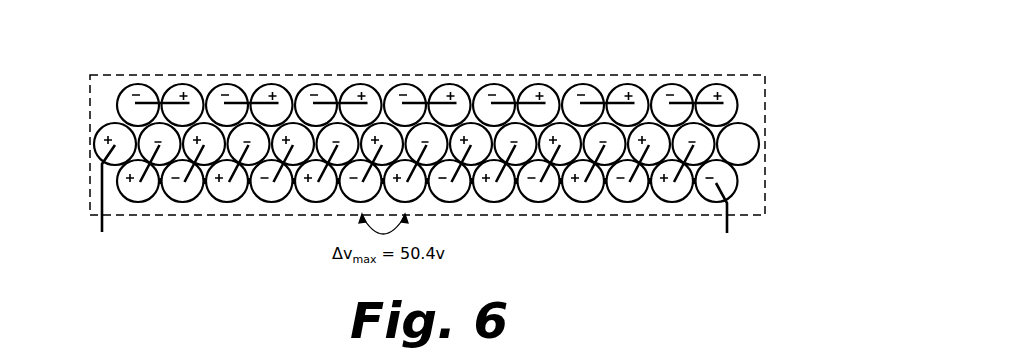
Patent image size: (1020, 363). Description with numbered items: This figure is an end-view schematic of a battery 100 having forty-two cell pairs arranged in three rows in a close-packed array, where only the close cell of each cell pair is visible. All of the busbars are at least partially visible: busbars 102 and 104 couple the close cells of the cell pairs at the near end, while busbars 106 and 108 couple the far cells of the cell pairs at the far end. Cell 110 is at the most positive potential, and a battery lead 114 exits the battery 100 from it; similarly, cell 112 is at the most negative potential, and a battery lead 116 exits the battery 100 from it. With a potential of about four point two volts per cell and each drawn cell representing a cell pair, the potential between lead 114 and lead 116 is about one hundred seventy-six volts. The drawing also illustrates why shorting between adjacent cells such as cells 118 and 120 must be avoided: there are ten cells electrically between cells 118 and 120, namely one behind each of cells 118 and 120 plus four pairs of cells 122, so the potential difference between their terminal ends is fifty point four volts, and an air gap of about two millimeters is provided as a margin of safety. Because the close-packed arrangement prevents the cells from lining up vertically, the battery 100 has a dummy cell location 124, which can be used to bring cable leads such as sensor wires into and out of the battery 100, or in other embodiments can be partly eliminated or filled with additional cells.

The battery 100 is at (547, 71).
The busbar 102 is at (141, 185).
The busbar 104 is at (158, 103).
The busbar 106 is at (223, 123).
The busbar 108 is at (160, 185).
The cell 110 is at (115, 123).
The cell 112 is at (738, 184).
The battery lead 114 is at (100, 231).
The battery lead 116 is at (723, 226).
The cell 118 is at (447, 204).
The cell 120 is at (492, 204).
The pairs of cells 122 is at (537, 84).
The dummy cell location 124 is at (759, 143).